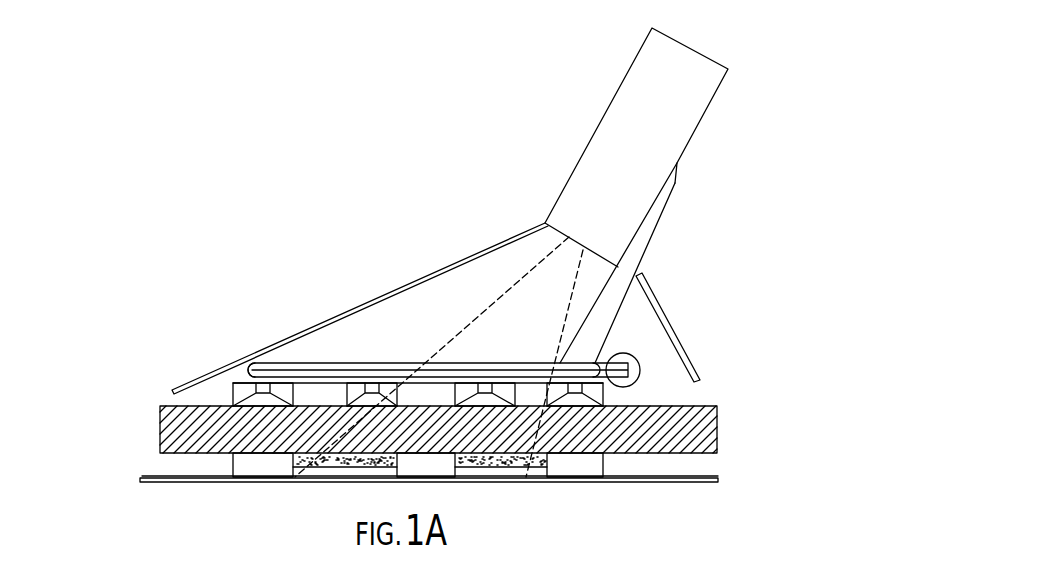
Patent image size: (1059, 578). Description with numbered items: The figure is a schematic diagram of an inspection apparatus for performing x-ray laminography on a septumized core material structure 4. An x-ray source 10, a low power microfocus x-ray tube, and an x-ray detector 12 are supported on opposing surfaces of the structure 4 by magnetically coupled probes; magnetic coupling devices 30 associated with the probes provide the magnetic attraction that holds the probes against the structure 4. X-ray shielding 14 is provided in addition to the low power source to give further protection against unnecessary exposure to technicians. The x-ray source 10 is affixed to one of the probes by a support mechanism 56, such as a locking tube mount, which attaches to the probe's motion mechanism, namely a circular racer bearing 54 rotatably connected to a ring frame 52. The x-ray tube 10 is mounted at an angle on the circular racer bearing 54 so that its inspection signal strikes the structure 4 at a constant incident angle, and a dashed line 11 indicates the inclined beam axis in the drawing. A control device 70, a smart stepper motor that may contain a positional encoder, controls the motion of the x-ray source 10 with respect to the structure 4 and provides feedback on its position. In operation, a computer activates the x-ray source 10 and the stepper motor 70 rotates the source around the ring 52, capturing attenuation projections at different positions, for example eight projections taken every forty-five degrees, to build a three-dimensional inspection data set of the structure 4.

The septumized core material structure 4 is at (719, 441).
The x-ray source 10 is at (643, 153).
The hinge axis lines 11 is at (497, 303).
The x-ray detector 12 is at (498, 462).
The x-ray shielding 14 is at (168, 390).
The magnetic coupling devices 30 is at (592, 467).
The ring frame 52 is at (252, 372).
The circular racer bearing 54 is at (347, 362).
The support mechanism 56 is at (643, 260).
The control device 70 is at (652, 373).